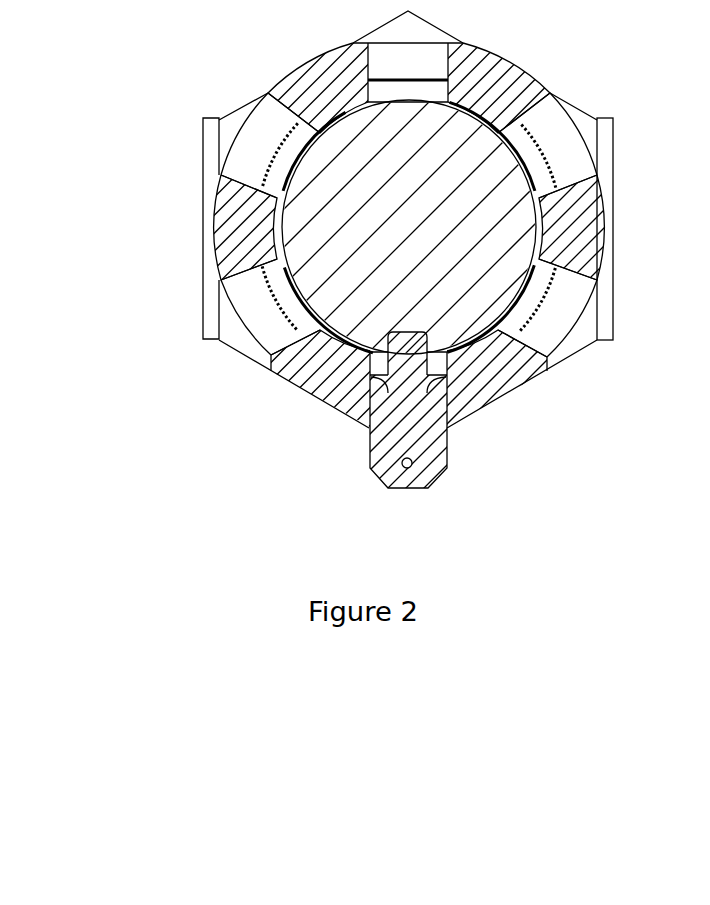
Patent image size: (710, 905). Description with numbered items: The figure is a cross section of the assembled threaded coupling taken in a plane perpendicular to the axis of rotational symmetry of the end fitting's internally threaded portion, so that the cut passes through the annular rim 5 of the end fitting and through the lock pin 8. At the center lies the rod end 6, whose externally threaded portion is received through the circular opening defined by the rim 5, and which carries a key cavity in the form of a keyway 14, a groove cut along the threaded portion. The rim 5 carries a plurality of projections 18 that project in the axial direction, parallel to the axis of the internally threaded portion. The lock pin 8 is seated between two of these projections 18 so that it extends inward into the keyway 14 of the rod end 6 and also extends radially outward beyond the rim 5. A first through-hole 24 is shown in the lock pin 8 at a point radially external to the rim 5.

The annular rim 5 is at (262, 316).
The rod end 6 is at (467, 187).
The lock pin 8 is at (422, 417).
The keyway 14 is at (428, 353).
The projections 18 is at (322, 388).
The first through-hole 24 is at (403, 465).